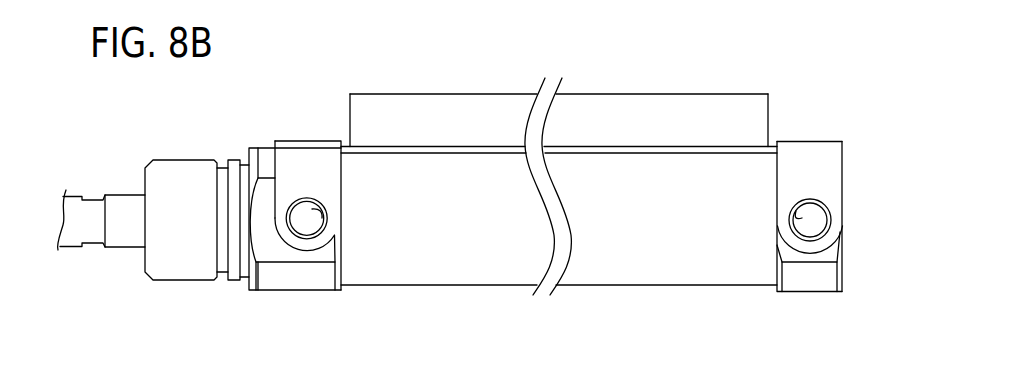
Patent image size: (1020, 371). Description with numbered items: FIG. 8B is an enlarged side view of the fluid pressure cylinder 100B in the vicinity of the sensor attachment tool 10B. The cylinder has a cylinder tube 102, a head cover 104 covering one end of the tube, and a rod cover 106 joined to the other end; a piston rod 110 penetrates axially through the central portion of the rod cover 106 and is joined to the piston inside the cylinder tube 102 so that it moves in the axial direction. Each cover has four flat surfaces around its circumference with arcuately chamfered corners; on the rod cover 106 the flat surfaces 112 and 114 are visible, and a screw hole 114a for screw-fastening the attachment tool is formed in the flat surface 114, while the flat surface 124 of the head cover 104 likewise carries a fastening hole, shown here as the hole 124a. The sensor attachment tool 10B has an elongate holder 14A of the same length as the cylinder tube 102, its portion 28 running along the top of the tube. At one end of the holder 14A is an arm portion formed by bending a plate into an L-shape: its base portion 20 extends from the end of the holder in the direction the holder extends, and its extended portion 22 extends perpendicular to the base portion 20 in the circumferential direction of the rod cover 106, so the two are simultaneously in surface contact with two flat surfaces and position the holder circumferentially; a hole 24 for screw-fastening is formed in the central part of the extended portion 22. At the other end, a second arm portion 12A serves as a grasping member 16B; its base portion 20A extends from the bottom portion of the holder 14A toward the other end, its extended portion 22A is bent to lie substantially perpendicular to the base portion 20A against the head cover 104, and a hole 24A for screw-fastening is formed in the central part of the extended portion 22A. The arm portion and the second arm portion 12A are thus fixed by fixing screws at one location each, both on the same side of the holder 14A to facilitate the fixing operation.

The sensor attachment tool 10B is at (674, 84).
The fluid pressure cylinder 100B is at (589, 294).
The cylinder tube 102 is at (453, 262).
The head cover 104 is at (809, 292).
The rod cover 106 is at (251, 148).
The piston rod 110 is at (112, 192).
The flat surface 112 is at (265, 147).
The flat surface 114 is at (262, 202).
The screw hole 114a is at (318, 213).
The second arm portion 12A is at (827, 140).
The holder 14A is at (456, 92).
The grasping member 16B is at (790, 124).
The base portion 20 is at (293, 141).
The base portion 20A is at (805, 140).
The extended portion 22 is at (318, 182).
The extended portion 22A is at (797, 183).
The hole 24 is at (327, 232).
The hole 24A is at (810, 203).
The rail body 28 is at (390, 108).
The flat surface 124 is at (797, 255).
The pin hole of head-side clevis 124a is at (795, 218).